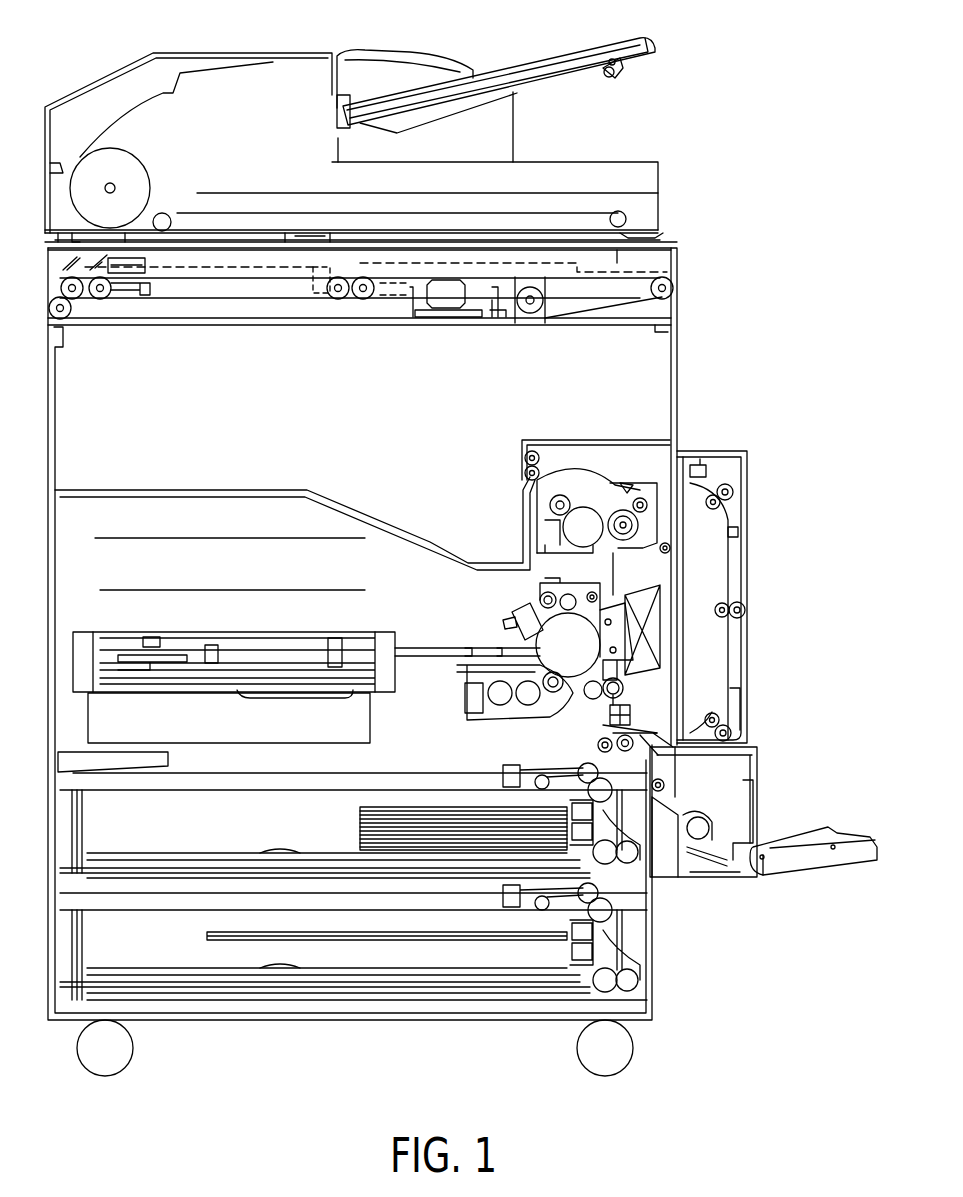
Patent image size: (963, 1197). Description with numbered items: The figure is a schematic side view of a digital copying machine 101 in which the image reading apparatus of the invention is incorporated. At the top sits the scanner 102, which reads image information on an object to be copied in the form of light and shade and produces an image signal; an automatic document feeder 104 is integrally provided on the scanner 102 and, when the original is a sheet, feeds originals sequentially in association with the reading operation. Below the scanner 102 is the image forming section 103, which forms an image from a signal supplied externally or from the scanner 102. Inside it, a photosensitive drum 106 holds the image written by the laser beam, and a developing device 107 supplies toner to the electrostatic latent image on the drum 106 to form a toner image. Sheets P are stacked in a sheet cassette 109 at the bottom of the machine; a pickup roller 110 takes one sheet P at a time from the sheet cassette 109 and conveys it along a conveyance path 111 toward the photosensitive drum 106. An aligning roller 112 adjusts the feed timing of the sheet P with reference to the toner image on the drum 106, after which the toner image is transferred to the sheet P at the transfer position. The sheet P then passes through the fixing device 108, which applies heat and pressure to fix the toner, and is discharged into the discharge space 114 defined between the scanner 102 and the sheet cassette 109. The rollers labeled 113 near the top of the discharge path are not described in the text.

The digital copying machine 101 is at (655, 397).
The scanner 102 is at (187, 290).
The image forming section 103 is at (752, 453).
The automatic document feeder 104 is at (142, 113).
The photosensitive drum 106 is at (616, 600).
The developing device 107 is at (530, 670).
The fixing device 108 is at (573, 502).
The sheet cassette 109 is at (313, 812).
The pickup roller 110 is at (530, 765).
The conveyance path 111 is at (643, 740).
The aligning roller 112 is at (592, 697).
The discharge rollers 113 is at (525, 458).
The discharge space 114 is at (225, 490).
The sheet P is at (442, 803).